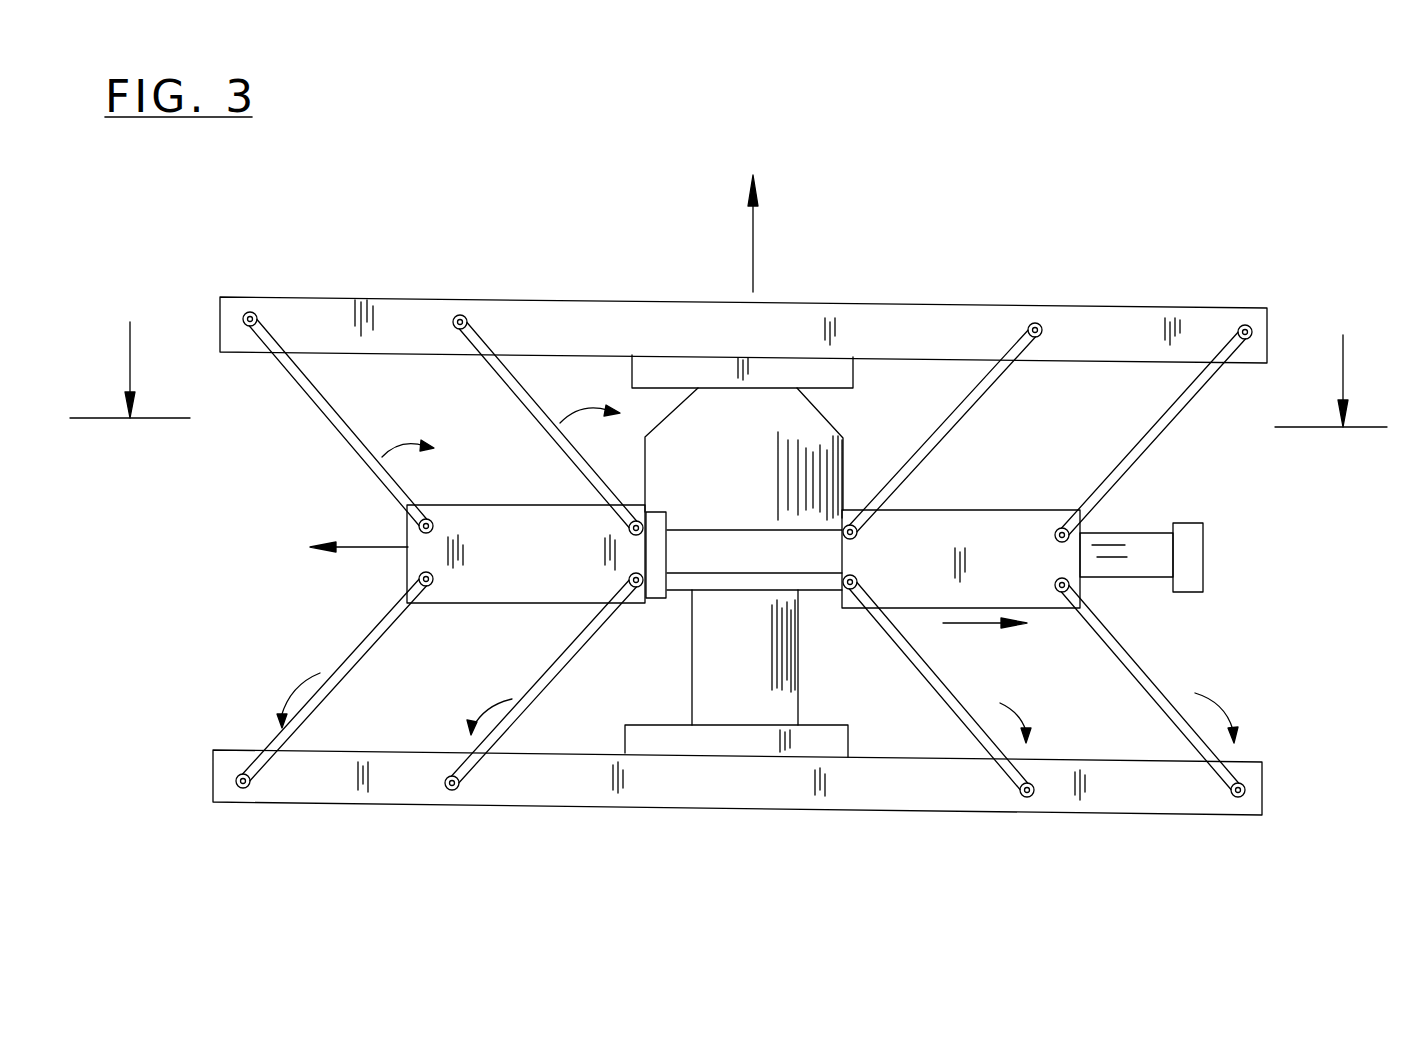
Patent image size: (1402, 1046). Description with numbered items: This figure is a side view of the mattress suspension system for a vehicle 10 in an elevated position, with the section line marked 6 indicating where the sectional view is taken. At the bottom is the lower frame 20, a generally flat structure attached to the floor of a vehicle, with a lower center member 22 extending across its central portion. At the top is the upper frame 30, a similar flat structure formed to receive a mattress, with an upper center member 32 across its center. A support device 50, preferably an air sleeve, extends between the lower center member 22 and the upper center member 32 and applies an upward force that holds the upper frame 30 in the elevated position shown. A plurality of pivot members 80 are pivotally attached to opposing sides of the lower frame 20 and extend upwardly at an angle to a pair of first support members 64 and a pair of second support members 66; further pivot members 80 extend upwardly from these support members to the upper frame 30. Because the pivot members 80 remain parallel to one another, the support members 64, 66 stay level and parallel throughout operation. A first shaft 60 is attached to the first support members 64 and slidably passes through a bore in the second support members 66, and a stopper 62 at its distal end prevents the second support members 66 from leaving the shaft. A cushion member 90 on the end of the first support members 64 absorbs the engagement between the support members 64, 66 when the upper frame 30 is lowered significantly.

The mattress suspension system for a vehicle 10 is at (946, 140).
The section line for FIG. 6 is at (728, 354).
The lower frame 20 is at (762, 788).
The lower center member 22 is at (682, 742).
The upper frame 30 is at (958, 320).
The upper center member 32 is at (682, 375).
The support device 50 is at (728, 437).
The first shaft 60 is at (1145, 543).
The stopper 62 is at (1188, 555).
The first support members 64 is at (465, 578).
The second support members 66 is at (1050, 573).
The pivot members 80 is at (320, 390).
The cushion member 90 is at (657, 593).